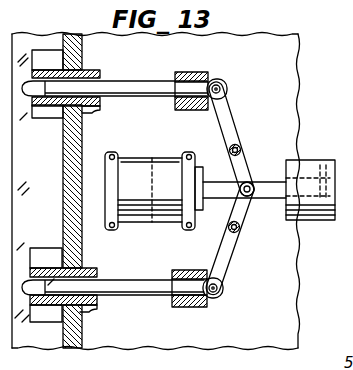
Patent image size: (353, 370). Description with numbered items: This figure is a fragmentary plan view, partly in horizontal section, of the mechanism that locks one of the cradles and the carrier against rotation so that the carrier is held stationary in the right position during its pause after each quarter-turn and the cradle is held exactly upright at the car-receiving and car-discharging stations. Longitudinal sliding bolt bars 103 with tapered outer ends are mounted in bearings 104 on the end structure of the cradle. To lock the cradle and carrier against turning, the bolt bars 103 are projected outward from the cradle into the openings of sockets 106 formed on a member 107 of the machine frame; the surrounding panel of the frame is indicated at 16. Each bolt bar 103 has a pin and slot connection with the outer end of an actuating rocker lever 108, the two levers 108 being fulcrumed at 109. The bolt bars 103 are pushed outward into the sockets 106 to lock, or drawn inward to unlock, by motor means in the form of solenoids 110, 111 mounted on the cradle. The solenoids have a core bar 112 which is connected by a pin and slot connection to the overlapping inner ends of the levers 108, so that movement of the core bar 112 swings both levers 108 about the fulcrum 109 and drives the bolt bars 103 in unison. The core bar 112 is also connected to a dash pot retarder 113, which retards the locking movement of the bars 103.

The panel frame 16 is at (279, 295).
The member of the machine frame 107 is at (35, 32).
The sockets 106 is at (46, 118).
The bearings 104 is at (96, 69).
The bolt bars 103 is at (143, 90).
The actuating rocker levers 108 is at (233, 109).
The fulcrum 109 is at (239, 146).
The solenoid 110 is at (130, 160).
The solenoid 111 is at (171, 170).
The core bar 112 is at (222, 192).
The dash pot retarder 113 is at (319, 160).